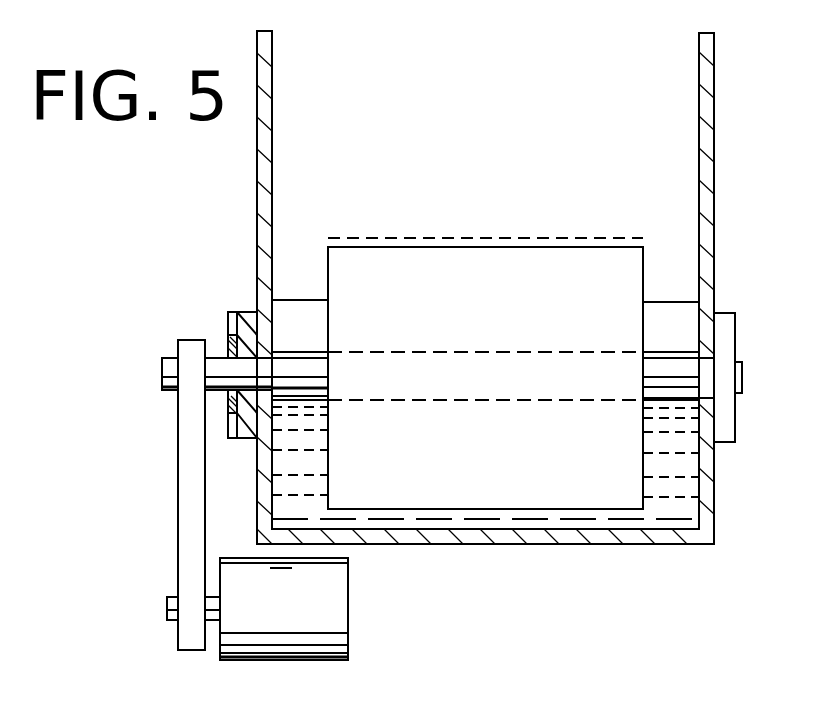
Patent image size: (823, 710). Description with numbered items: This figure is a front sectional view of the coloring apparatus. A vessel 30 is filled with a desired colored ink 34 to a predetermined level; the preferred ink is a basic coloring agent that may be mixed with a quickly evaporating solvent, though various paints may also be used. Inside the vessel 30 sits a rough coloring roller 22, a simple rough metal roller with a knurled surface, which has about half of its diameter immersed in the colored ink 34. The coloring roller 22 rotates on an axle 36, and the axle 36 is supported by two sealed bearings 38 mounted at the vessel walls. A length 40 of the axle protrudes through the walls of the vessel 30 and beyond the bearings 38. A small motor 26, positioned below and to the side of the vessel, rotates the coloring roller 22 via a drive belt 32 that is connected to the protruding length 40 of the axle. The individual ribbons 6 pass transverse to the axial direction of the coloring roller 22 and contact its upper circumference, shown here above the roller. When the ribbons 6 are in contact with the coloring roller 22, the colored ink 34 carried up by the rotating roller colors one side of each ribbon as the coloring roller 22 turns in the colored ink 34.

The individual ribbons 6 is at (596, 237).
The coloring roller 22 is at (643, 281).
The motor 26 is at (352, 606).
The vessel 30 is at (714, 208).
The drive belt 32 is at (178, 469).
The colored ink 34 is at (678, 488).
The axle 36 is at (297, 360).
The sealed bearings 38 is at (232, 339).
The length of the axle 40 is at (163, 360).